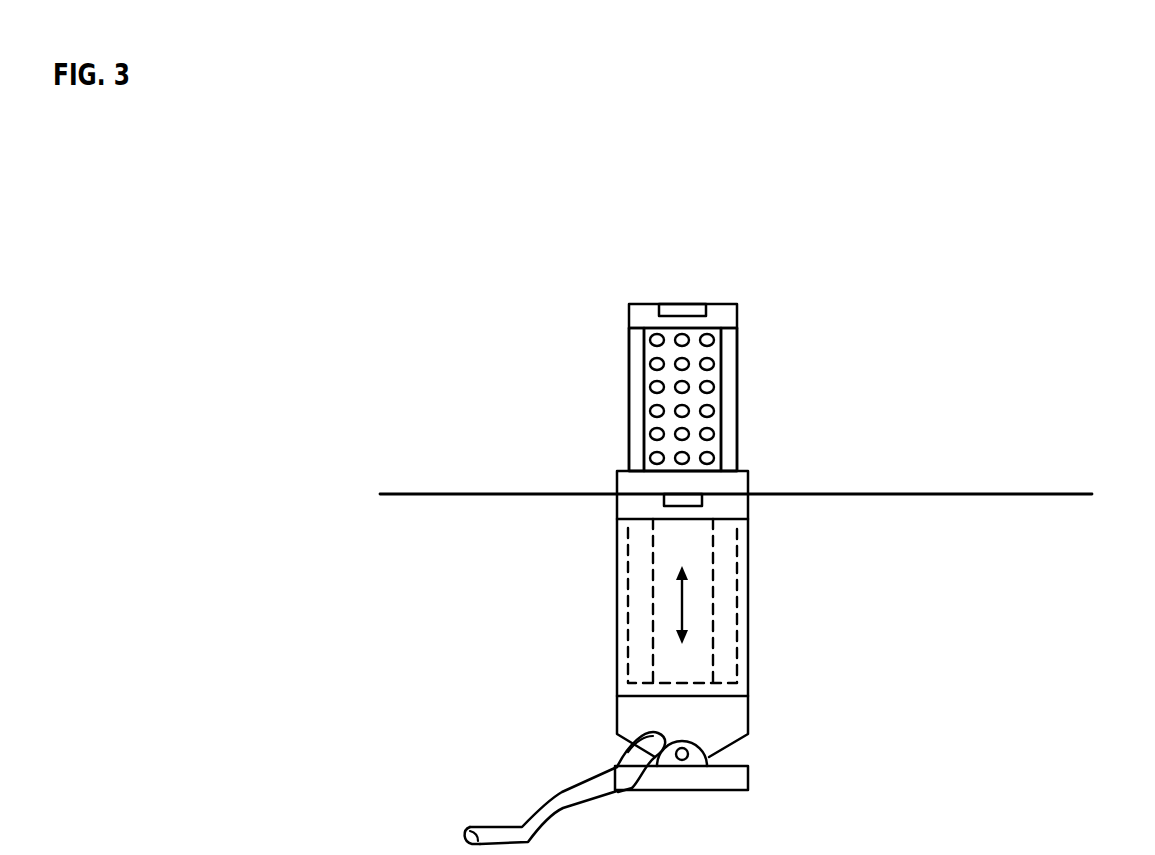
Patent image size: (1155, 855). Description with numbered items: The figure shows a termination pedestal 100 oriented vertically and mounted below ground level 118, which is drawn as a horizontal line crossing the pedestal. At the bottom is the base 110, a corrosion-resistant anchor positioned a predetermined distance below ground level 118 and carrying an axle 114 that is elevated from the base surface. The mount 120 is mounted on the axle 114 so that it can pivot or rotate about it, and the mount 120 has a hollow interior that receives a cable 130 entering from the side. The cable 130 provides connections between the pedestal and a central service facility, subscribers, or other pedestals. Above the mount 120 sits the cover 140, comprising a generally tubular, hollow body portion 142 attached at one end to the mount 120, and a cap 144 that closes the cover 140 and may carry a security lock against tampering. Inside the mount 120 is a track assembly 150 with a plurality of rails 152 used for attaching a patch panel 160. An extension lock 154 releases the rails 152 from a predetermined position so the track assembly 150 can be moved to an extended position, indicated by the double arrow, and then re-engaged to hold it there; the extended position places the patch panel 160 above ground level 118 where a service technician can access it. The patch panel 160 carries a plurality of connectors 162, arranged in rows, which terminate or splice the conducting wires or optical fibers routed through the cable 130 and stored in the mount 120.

The termination pedestal 100 is at (1090, 217).
The base 110 is at (748, 780).
The axle 114 is at (686, 759).
The ground level 118 is at (1047, 494).
The mount 120 is at (748, 714).
The cable 130 is at (553, 823).
The cover 140 is at (704, 583).
The body portion 142 is at (617, 606).
The cap 144 is at (617, 485).
The track assembly 150 is at (704, 363).
The rails 152 is at (637, 445).
The extension lock 154 is at (678, 312).
The patch panel 160 is at (681, 399).
The connectors 162 is at (650, 411).